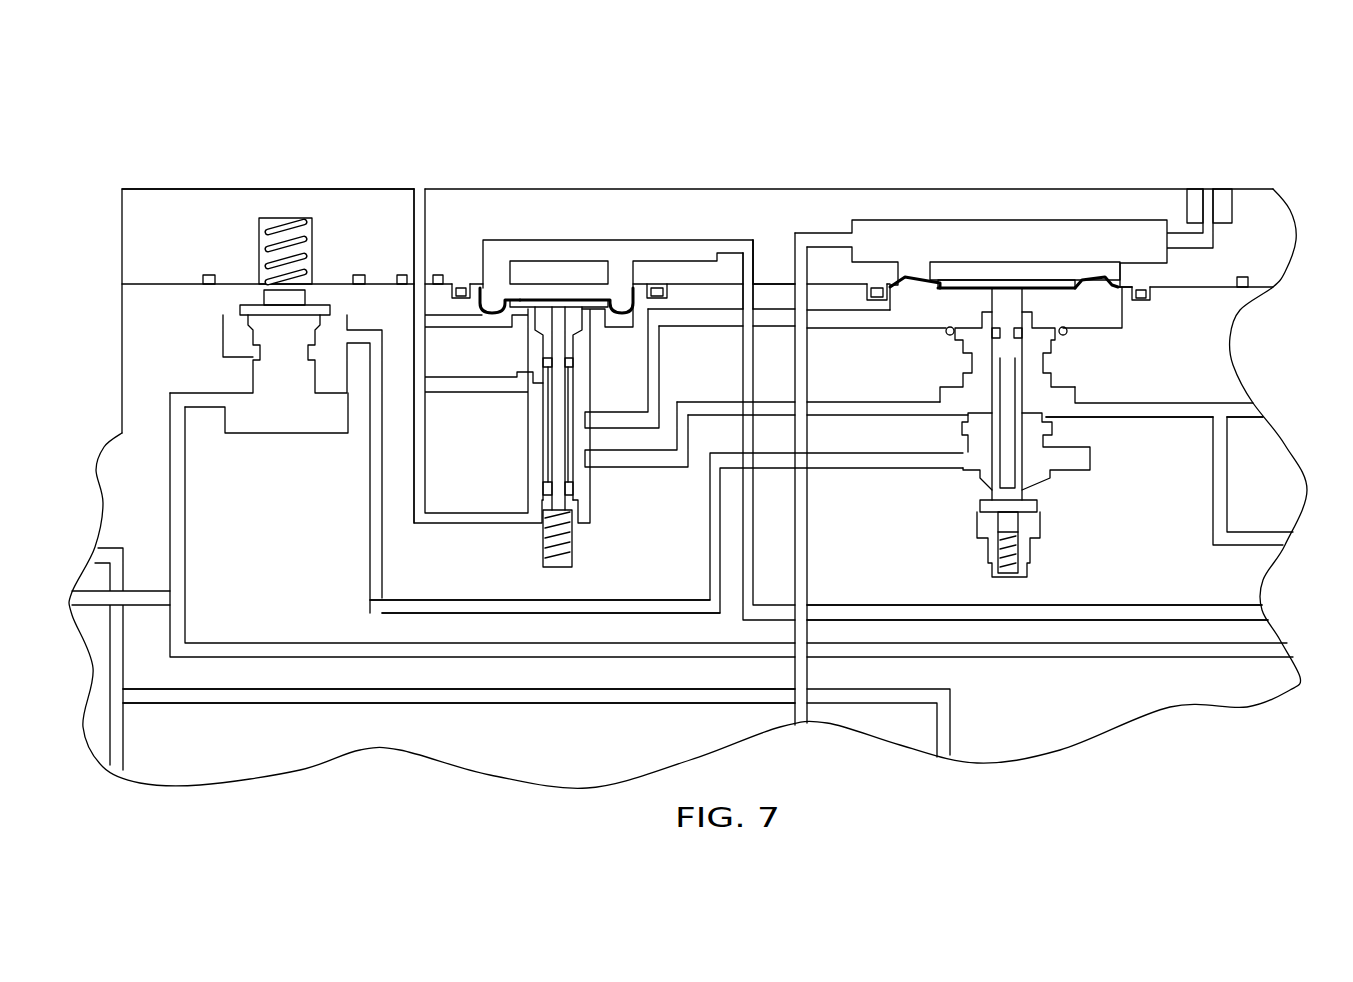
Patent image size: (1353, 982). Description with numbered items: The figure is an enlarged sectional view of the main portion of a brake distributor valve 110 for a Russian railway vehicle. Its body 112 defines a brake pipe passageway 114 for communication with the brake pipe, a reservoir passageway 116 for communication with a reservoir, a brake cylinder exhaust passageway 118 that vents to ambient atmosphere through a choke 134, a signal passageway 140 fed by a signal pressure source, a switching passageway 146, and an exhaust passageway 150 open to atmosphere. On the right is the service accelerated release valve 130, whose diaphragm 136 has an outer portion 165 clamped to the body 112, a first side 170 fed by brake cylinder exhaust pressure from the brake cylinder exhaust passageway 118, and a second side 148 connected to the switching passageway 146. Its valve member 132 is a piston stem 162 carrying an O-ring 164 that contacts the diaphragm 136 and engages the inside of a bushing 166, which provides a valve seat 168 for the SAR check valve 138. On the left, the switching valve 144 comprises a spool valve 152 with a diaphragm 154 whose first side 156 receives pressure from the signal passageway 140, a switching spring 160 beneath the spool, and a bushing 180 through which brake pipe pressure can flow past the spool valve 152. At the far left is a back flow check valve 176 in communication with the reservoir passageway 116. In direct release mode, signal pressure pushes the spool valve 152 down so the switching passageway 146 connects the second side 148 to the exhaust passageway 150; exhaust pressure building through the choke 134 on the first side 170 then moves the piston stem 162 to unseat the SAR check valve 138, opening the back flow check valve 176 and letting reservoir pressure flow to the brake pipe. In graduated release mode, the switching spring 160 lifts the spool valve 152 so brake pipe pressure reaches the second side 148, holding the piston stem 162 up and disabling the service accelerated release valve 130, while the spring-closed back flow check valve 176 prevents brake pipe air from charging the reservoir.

The brake distributor valve 110 is at (280, 153).
The body 112 is at (253, 753).
The brake pipe passageway 114 is at (1170, 417).
The reservoir passageway 116 is at (607, 597).
The brake cylinder exhaust passageway 118 is at (778, 250).
The service accelerated release valve 130 is at (1033, 240).
The valve member 132 is at (1010, 300).
The choke 134 is at (1240, 205).
The diaphragm 136 is at (1100, 272).
The SAR check valve 138 is at (1010, 568).
The signal passageway 140 is at (875, 603).
The switching valve 144 is at (538, 255).
The switching passageway 146 is at (848, 327).
The second side 148 is at (920, 282).
The exhaust passageway 150 is at (414, 222).
The spool valve 152 is at (555, 401).
The diaphragm 154 is at (617, 302).
The first side 156 is at (495, 300).
The switching spring 160 is at (542, 543).
The piston stem 162 is at (1007, 394).
The O-ring 164 is at (1025, 333).
The outer portion 165 is at (1153, 295).
The bushing 166 is at (1035, 437).
The valve seat 168 is at (990, 485).
The first side 170 is at (1103, 277).
The back flow check valve 176 is at (254, 300).
The bushing 180 is at (585, 480).